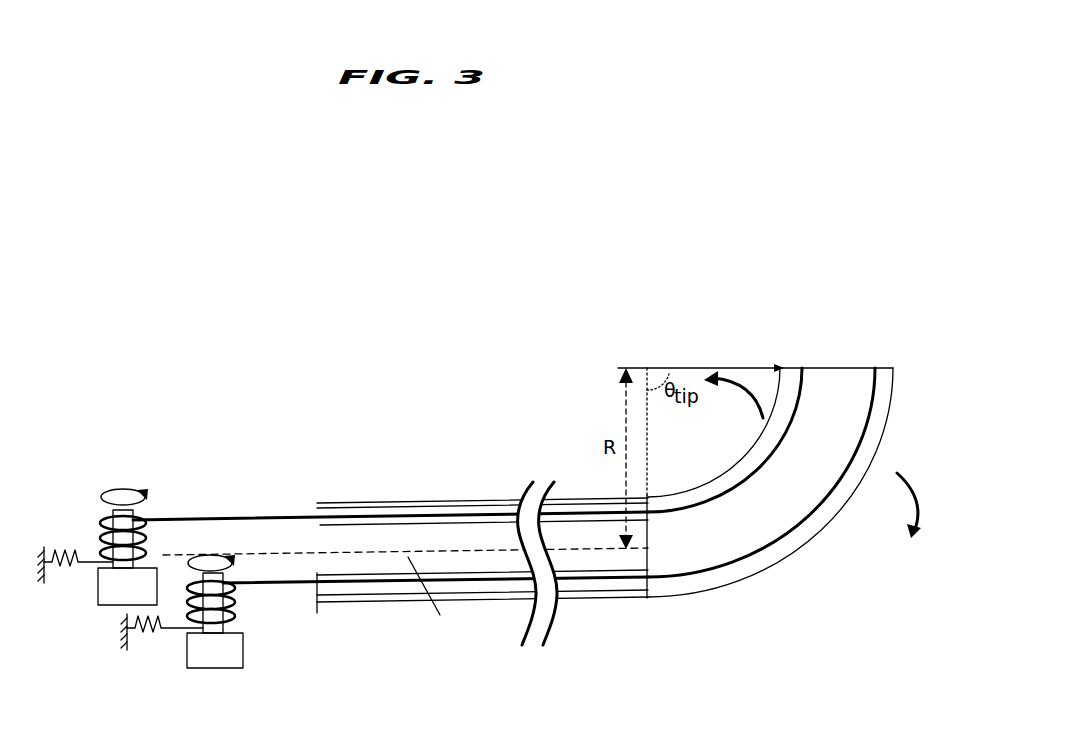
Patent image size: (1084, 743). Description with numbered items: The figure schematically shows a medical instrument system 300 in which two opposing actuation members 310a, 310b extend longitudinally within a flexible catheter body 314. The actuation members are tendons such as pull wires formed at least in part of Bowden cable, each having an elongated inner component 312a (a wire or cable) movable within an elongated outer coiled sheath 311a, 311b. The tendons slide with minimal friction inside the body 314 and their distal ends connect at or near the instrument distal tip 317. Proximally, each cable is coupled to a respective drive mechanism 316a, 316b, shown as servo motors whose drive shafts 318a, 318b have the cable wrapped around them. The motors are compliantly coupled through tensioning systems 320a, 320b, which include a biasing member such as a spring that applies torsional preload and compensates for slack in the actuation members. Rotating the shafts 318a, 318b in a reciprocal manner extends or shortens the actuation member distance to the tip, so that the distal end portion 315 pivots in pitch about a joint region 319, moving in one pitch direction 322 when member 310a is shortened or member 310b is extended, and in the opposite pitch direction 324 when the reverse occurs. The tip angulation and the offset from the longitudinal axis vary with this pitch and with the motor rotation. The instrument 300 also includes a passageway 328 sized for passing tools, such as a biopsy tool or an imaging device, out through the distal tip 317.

The medical instrument system 300 is at (390, 469).
The actuation member 310a is at (482, 511).
The actuation member 310b is at (490, 575).
The outer coiled sheath 311a is at (356, 508).
The outer coiled sheath 311b is at (367, 576).
The inner component 312a is at (258, 518).
The flexible catheter body 314 is at (578, 600).
The distal end portion 315 is at (803, 553).
The drive mechanism 316a is at (98, 600).
The drive mechanism 316b is at (192, 670).
The distal tip 317 is at (860, 368).
The drive shaft 318a is at (120, 516).
The drive shaft 318b is at (208, 582).
The joint region 319 is at (653, 597).
The tensioning system 320a is at (64, 568).
The tensioning system 320b is at (152, 634).
The pitch direction 322 is at (740, 392).
The opposite pitch direction 324 is at (910, 487).
The passageway 328 is at (810, 462).